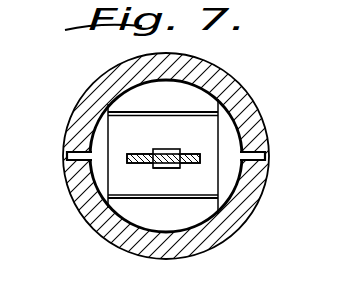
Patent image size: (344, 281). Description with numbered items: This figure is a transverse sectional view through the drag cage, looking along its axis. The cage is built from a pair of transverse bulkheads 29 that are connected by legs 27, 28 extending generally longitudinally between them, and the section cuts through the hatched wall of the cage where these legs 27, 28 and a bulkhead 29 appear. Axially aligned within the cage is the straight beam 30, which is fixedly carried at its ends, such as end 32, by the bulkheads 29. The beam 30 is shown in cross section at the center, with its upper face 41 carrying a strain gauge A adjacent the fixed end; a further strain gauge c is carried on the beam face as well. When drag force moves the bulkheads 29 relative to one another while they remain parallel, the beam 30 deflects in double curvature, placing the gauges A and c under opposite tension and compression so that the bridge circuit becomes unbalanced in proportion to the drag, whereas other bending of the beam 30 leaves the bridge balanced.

The leg 27 is at (100, 90).
The leg 28 is at (250, 207).
The transverse bulkhead 29 is at (114, 127).
The straight beam 30 is at (135, 162).
The end of beam 32 is at (200, 155).
The upper face of beam 41 is at (133, 153).
The strain gauge A is at (177, 149).
The strain gauge c is at (171, 168).